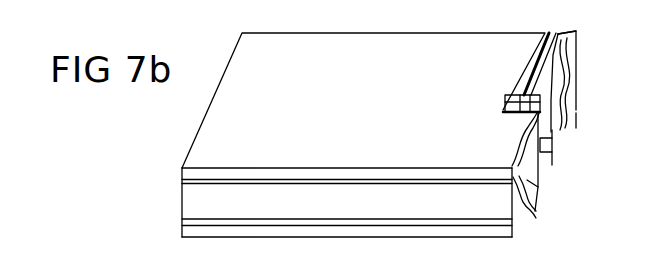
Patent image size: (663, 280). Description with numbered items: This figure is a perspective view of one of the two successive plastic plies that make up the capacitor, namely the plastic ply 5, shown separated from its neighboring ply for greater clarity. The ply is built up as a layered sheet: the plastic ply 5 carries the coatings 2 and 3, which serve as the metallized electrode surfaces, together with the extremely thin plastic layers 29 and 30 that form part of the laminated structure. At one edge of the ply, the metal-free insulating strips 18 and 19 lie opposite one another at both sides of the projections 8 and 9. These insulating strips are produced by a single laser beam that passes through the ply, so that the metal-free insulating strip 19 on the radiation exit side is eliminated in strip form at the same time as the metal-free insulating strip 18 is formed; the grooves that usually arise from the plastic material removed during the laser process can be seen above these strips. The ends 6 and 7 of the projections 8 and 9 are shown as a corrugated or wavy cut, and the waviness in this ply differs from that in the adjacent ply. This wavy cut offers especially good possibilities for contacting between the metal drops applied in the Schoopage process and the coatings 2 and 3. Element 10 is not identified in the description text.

The extremely thin plastic layer 29 is at (183, 168).
The coating 2 is at (183, 182).
The plastic ply 5 is at (198, 205).
The coating 3 is at (183, 220).
The extremely thin plastic layer 30 is at (183, 237).
The projection 8 is at (518, 133).
The metal-free insulating strip 18 is at (558, 34).
The end of projection 7 is at (577, 79).
The projection 9 is at (587, 21).
The metal-free insulating strip 19 is at (562, 137).
The flexible conductor 10 is at (543, 140).
The end of projection 6 is at (530, 196).